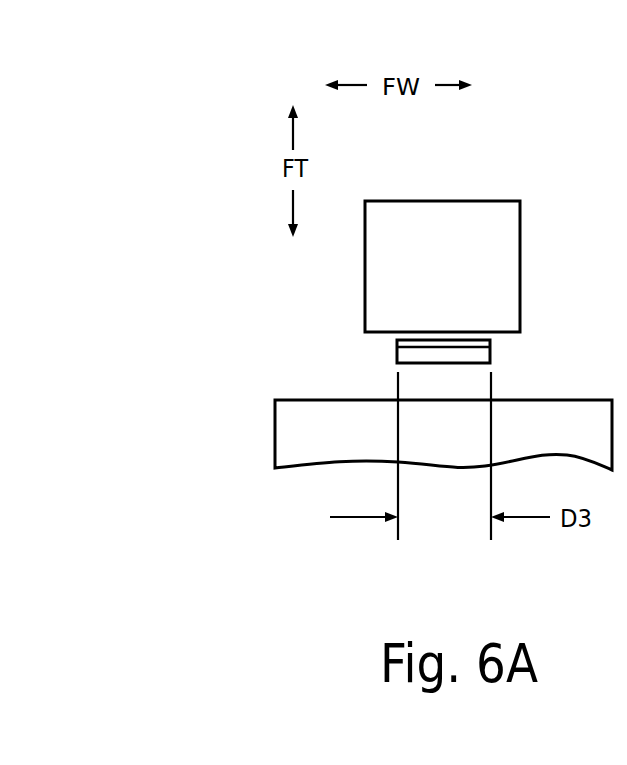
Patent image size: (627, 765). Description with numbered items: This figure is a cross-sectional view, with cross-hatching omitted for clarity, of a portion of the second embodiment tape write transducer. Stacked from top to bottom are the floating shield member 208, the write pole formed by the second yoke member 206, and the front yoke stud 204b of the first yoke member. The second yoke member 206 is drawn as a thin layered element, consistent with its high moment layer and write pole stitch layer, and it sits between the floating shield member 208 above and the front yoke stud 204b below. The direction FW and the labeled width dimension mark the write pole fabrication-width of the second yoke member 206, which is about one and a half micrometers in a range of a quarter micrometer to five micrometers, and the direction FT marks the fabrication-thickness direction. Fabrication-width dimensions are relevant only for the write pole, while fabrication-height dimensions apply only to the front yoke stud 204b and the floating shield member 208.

The floating shield member 208 is at (427, 201).
The second yoke member 206 is at (376, 353).
The front yoke stud 204b is at (273, 423).